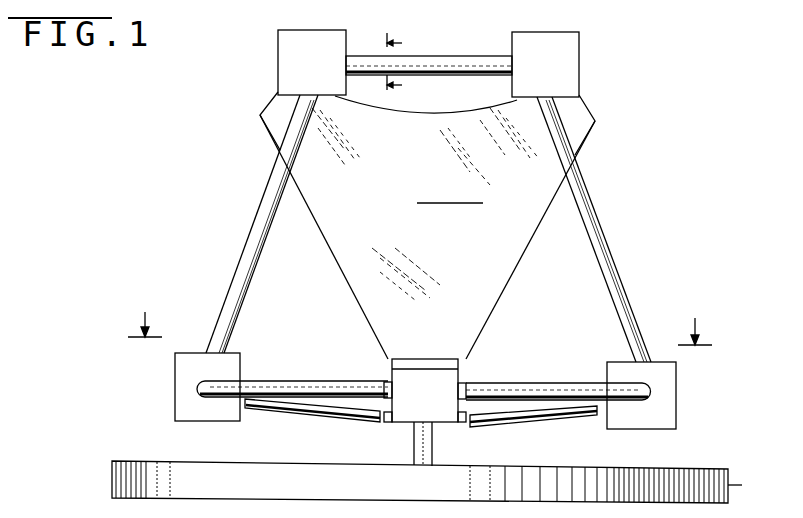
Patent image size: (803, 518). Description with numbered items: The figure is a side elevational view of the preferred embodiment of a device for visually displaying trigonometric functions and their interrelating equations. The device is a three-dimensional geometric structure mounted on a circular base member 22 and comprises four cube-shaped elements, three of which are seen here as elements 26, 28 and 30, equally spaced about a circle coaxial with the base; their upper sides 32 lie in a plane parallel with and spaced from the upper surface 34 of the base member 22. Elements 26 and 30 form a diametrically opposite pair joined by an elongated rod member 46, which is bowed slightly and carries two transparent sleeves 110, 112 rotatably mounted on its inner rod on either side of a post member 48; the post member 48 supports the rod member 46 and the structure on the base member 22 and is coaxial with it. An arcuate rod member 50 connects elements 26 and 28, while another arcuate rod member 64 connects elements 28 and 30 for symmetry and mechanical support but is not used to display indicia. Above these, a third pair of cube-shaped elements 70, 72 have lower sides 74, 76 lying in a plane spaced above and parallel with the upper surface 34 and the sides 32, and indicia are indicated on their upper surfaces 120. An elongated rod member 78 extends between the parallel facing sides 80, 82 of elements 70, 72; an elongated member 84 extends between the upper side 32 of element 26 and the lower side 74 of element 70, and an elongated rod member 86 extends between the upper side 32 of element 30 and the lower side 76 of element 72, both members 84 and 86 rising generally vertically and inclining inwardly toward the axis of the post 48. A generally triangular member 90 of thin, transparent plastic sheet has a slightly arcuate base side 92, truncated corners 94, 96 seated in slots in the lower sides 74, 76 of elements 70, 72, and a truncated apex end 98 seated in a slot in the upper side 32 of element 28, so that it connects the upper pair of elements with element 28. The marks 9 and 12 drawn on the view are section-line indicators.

The displacement dimension 9 is at (400, 64).
The section line 12 is at (420, 317).
The circular base member 22 is at (730, 485).
The cube-shaped element 26 is at (678, 391).
The cube-shaped element 28 is at (460, 375).
The cube-shaped element 30 is at (174, 386).
The upper side 32 is at (190, 352).
The upper surface 34 is at (686, 467).
The elongated rod member 46 is at (567, 441).
The post member 48 is at (433, 457).
The arcuate rod member 50 is at (528, 383).
The arcuate rod member 64 is at (328, 380).
The cube-shaped element 70 is at (578, 38).
The cube-shaped element 72 is at (300, 33).
The lower side 74 is at (518, 99).
The lower side 76 is at (328, 98).
The elongated rod member 78 is at (440, 55).
The facing side 80 is at (506, 48).
The facing side 82 is at (347, 37).
The elongated member 84 is at (600, 222).
The elongated rod member 86 is at (263, 206).
The triangular member 90 is at (506, 293).
The base side 92 is at (430, 110).
The truncated corner 94 is at (597, 100).
The truncated corner 96 is at (266, 97).
The apex end 98 is at (424, 358).
The transparent sleeve 110 is at (309, 415).
The transparent sleeve 112 is at (540, 412).
The upper surface 120 is at (282, 31).